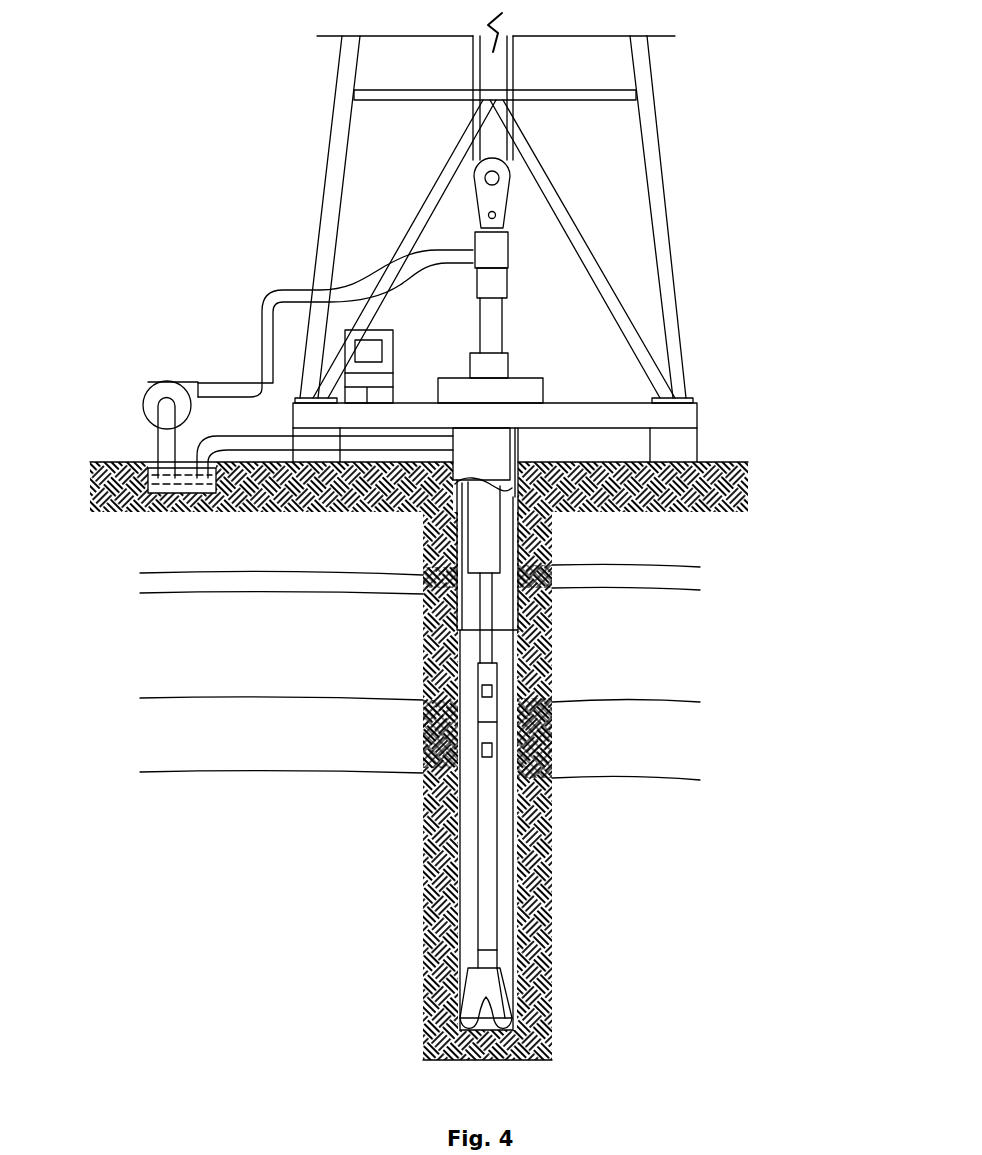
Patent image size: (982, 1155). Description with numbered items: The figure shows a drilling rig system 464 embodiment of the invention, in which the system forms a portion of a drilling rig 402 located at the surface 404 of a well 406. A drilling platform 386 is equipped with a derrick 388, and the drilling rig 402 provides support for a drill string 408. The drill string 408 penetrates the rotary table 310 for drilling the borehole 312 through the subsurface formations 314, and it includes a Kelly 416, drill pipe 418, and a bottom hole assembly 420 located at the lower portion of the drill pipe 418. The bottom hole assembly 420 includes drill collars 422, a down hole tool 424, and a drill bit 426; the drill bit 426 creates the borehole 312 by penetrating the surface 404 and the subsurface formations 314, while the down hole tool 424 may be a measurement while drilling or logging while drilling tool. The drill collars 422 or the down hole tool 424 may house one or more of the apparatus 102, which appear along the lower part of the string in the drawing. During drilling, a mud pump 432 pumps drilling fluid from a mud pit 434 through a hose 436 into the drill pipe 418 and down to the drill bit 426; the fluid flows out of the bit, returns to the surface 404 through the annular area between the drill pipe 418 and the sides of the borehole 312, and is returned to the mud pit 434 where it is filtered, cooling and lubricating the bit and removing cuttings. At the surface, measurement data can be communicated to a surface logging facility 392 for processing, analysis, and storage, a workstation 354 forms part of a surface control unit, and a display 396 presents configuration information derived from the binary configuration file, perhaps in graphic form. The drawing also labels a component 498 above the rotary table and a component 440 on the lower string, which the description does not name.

The drilling rig system 464 is at (246, 120).
The derrick 388 is at (653, 113).
The drilling rig 402 is at (672, 221).
The hose 436 is at (275, 288).
The mud pump 432 is at (170, 382).
The mud pit 434 is at (168, 491).
The surface logging facility 392 is at (386, 326).
The workstation 354 is at (394, 350).
The display 396 is at (383, 351).
The rotary table 310 is at (455, 378).
The Kelly 416 is at (503, 320).
The swivel 498 is at (509, 366).
The drilling platform 386 is at (698, 405).
The surface 404 is at (712, 462).
The well 406 is at (527, 455).
The drill collars 422 is at (503, 535).
The drill pipe 418 is at (488, 605).
The bottom hole assembly 440 is at (508, 668).
The apparatus 102 is at (490, 692).
The drill string 408 is at (503, 828).
The borehole 312 is at (516, 886).
The down hole tool 424 is at (486, 934).
The drill bit 426 is at (494, 988).
The subsurface formations 314 is at (117, 572).
The bottom hole assembly 420 is at (417, 627).